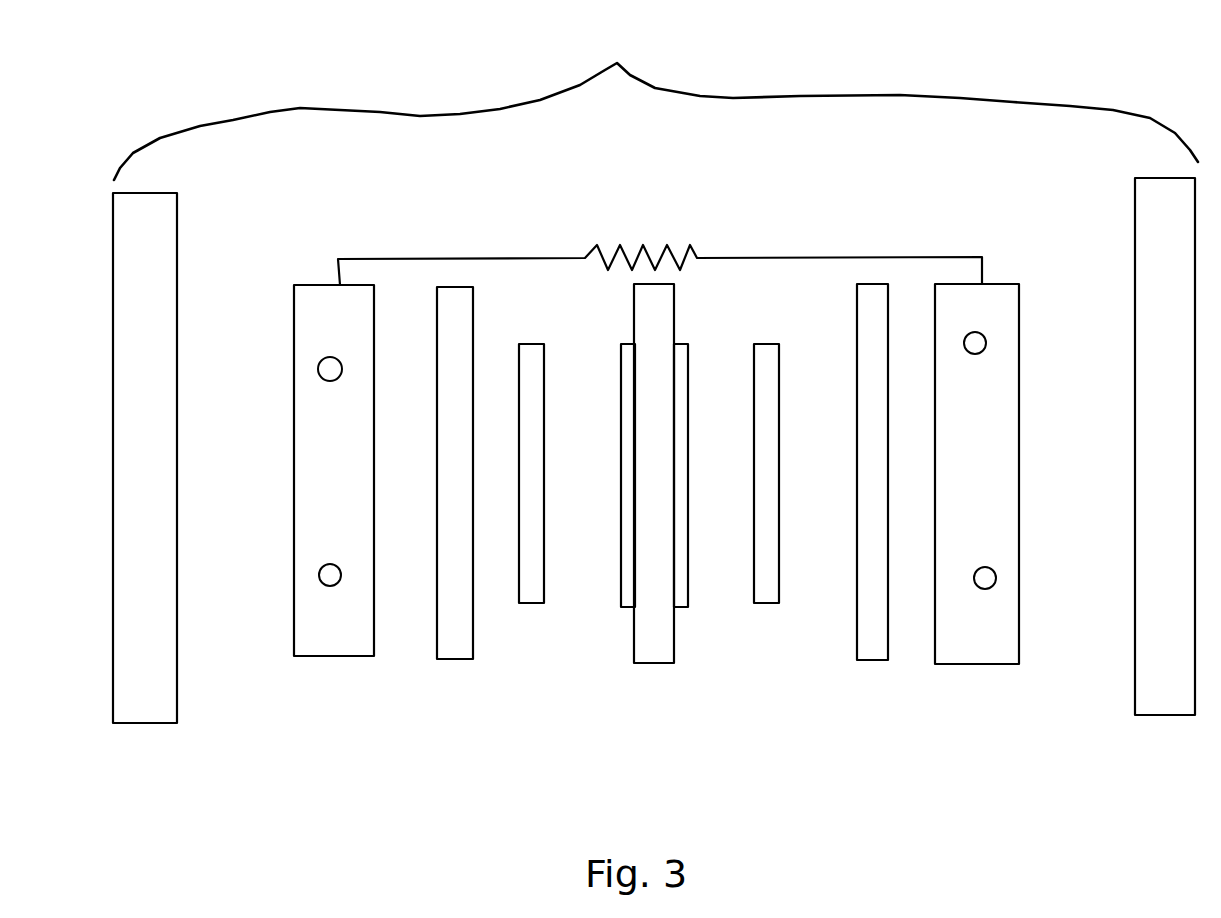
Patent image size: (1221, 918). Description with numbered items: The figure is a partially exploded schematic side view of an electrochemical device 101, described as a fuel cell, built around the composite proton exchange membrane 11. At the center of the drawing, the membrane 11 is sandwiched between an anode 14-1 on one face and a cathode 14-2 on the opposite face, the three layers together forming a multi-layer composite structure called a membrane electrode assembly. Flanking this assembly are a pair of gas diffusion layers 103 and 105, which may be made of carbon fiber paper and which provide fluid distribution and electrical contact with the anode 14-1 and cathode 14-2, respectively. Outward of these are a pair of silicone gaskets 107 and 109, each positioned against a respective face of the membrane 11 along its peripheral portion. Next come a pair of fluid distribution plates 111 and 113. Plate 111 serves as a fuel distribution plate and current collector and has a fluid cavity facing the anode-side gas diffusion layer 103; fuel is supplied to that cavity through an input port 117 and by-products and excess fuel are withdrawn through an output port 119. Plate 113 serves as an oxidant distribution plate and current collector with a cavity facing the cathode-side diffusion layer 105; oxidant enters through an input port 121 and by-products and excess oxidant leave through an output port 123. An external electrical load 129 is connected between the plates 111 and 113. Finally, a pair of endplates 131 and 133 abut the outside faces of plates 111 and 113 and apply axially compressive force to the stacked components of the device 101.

The electrochemical device 101 is at (656, 102).
The composite proton exchange membrane 11 is at (649, 692).
The anode 14-1 is at (625, 608).
The cathode 14-2 is at (680, 608).
The gas diffusion layer 103 is at (525, 604).
The gas diffusion layer 105 is at (766, 604).
The silicone gasket 107 is at (452, 660).
The silicone gasket 109 is at (876, 660).
The fluid distribution plate 111 is at (326, 657).
The fluid distribution plate 113 is at (978, 665).
The input port 117 is at (318, 369).
The output port 119 is at (319, 577).
The input port 121 is at (986, 341).
The output port 123 is at (996, 574).
The external electrical load 129 is at (637, 248).
The endplate 131 is at (141, 723).
The endplate 133 is at (1165, 716).